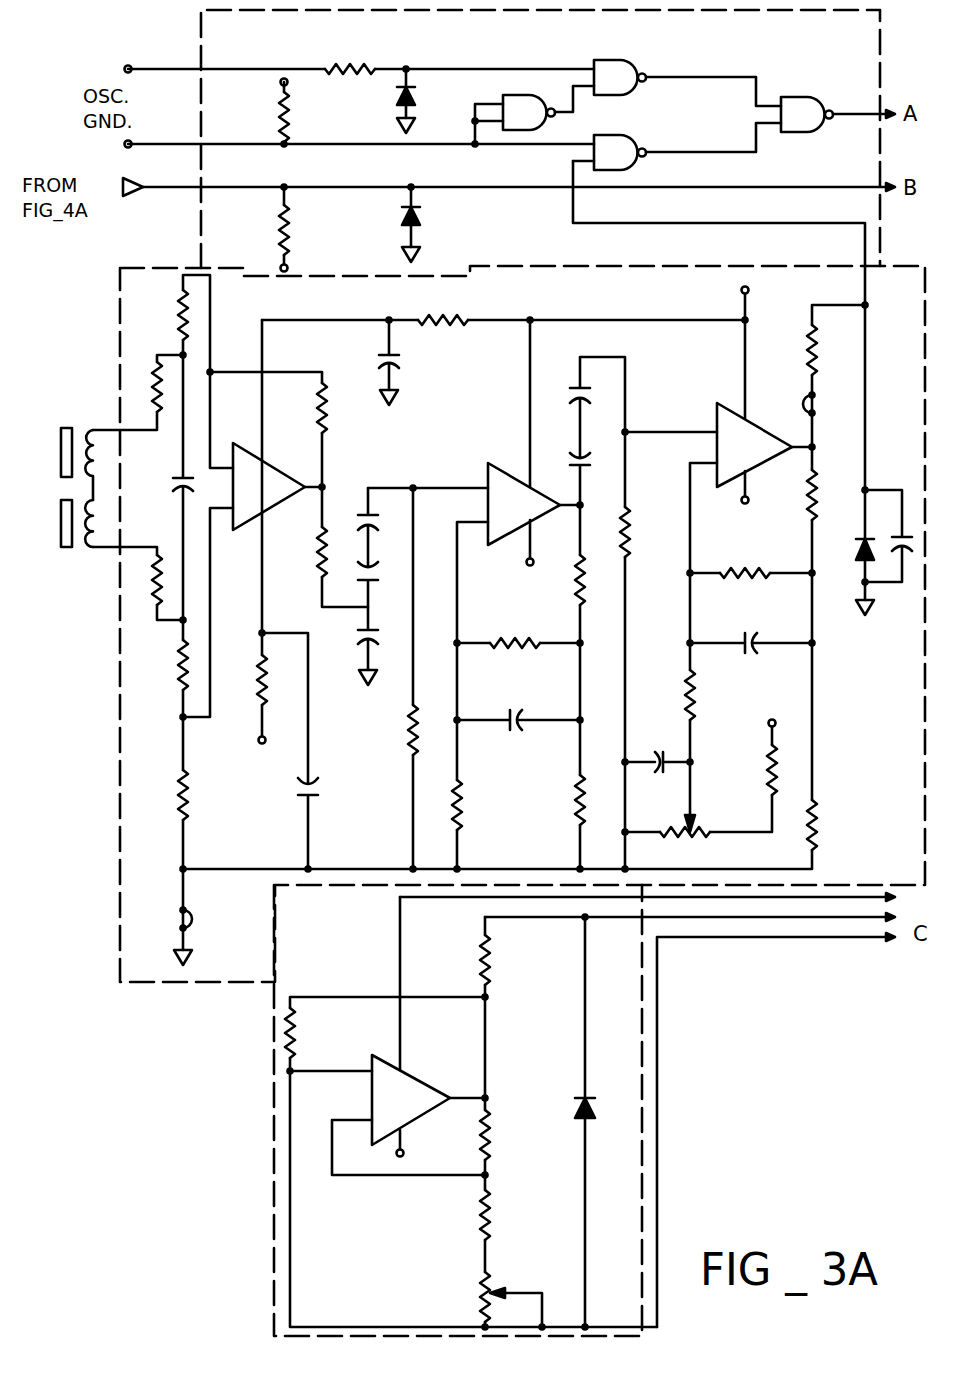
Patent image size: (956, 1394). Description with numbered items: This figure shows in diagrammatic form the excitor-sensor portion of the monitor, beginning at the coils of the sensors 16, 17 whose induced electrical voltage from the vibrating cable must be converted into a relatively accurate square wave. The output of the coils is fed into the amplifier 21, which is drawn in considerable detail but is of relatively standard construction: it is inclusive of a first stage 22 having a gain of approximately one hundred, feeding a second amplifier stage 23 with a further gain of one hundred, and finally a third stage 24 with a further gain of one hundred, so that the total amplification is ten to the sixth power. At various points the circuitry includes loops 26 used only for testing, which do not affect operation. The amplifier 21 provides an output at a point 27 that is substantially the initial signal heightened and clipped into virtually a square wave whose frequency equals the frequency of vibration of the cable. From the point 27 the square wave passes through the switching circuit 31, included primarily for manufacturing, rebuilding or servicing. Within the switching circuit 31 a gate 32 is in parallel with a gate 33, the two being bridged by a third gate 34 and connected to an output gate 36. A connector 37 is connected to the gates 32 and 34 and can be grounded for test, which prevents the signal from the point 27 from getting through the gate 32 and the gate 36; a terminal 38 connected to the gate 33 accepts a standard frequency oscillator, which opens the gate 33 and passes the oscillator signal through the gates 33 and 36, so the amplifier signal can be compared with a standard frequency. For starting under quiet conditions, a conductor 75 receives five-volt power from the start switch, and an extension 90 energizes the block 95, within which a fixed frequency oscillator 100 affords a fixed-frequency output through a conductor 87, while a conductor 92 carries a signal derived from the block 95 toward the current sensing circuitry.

The sensor 16 is at (78, 425).
The sensor 17 is at (78, 552).
The amplifier 21 is at (593, 270).
The first stage 22 is at (273, 466).
The second amplifier stage 23 is at (486, 470).
The third stage 24 is at (717, 405).
The loops 26 is at (212, 921).
The output point 27 is at (868, 305).
The switching circuit 31 is at (508, 14).
The gate 32 is at (630, 137).
The gate 33 is at (630, 62).
The third gate 34 is at (526, 108).
The output gate 36 is at (810, 97).
The connector 37 is at (125, 147).
The terminal 38 is at (131, 65).
The conductor 75 is at (247, 190).
The conductor 87 is at (619, 921).
The extension 90 is at (823, 898).
The conductor 92 is at (658, 1030).
The block 95 is at (273, 1136).
The fixed frequency oscillator 100 is at (422, 1080).